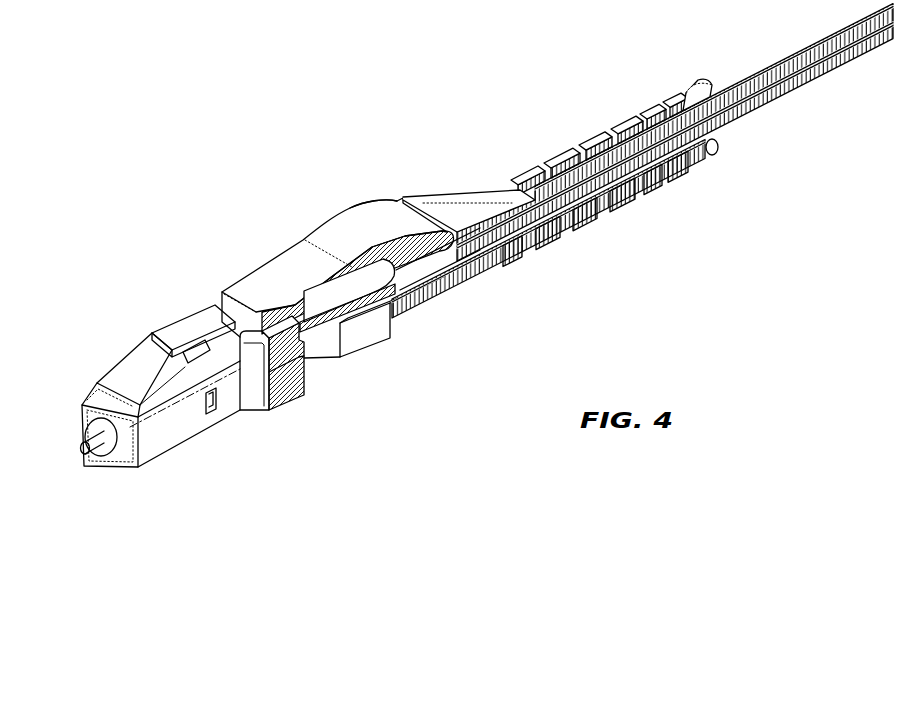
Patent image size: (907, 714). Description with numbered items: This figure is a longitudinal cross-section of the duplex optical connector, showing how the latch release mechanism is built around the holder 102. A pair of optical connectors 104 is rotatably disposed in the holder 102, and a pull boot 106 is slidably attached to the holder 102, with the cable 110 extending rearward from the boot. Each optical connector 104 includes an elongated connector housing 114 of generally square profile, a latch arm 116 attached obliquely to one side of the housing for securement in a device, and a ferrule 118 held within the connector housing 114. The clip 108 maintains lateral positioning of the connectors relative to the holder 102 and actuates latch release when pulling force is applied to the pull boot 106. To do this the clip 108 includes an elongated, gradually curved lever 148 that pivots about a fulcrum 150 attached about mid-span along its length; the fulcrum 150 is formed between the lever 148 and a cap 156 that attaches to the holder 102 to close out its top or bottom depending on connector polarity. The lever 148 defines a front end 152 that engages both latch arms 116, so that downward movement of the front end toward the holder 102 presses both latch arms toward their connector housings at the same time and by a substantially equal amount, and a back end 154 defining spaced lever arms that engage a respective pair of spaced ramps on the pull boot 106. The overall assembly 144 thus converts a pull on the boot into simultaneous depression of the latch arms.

The holder 102 is at (292, 402).
The optical connector 104 is at (88, 405).
The pull boot 106 is at (458, 195).
The clip 108 is at (340, 212).
The cable 110 is at (837, 62).
The connector housing 114 is at (173, 443).
The latch arm 116 is at (207, 303).
The ferrule 118 is at (88, 455).
The connector assembly 144 is at (452, 268).
The lever 148 is at (358, 224).
The fulcrum 150 is at (395, 268).
The front end 152 is at (259, 238).
The back end 154 is at (394, 188).
The cap 156 is at (325, 325).